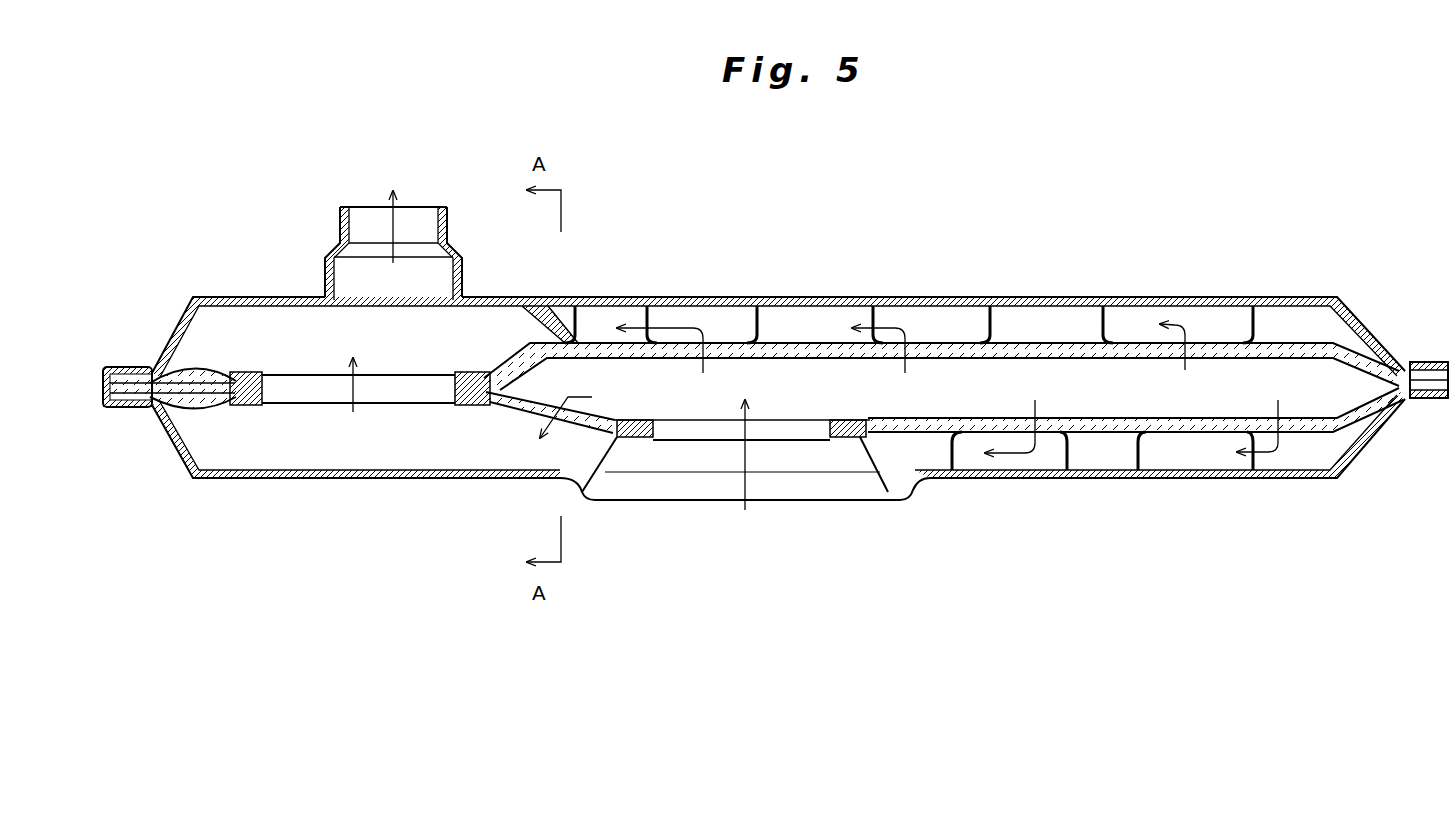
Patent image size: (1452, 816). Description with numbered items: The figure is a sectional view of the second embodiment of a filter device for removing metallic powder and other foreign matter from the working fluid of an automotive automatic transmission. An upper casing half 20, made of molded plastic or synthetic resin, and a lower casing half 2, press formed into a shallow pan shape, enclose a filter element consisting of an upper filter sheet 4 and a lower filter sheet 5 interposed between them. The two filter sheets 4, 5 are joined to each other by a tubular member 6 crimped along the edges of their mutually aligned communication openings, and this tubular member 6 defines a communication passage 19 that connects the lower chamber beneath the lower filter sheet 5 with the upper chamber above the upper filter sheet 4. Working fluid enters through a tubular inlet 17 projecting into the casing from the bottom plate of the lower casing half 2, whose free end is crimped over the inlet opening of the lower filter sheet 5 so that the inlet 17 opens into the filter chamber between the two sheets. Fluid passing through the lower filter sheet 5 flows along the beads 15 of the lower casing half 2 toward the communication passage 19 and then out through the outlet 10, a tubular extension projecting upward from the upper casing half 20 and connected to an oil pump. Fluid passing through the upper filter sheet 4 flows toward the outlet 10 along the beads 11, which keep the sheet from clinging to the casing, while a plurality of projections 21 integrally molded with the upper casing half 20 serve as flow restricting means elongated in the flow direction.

The lower casing half 2 is at (1293, 477).
The upper filter sheet 4 is at (1035, 343).
The lower filter sheet 5 is at (1112, 440).
The tubular member 6 is at (317, 407).
The outlet 10 is at (338, 213).
The beads 11 is at (920, 318).
The beads 15 is at (1193, 453).
The tubular inlet 17 is at (873, 462).
The communication passage 19 is at (262, 390).
The upper casing half 20 is at (1278, 300).
The projections 21 is at (582, 330).